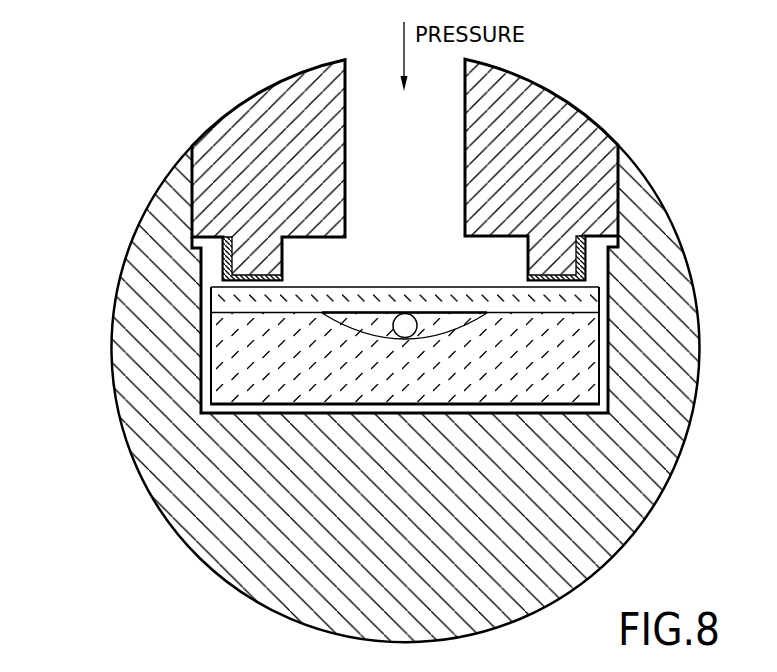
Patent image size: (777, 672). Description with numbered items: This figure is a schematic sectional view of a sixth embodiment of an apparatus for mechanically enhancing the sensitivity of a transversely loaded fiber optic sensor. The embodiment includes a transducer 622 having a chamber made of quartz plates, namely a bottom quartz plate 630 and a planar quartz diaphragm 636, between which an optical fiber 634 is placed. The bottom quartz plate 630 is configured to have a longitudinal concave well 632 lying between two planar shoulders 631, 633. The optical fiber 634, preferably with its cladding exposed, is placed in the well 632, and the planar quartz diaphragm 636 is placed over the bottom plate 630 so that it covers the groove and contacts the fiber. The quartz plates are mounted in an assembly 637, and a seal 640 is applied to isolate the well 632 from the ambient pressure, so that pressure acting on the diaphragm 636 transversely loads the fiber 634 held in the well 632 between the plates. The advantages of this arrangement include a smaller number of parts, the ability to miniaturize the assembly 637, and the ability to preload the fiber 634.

The transducer 622 is at (403, 350).
The bottom quartz plate 630 is at (406, 359).
The planar shoulder 631 is at (240, 315).
The concave well 632 is at (447, 322).
The planar shoulder 633 is at (563, 312).
The optical fiber 634 is at (407, 324).
The planar quartz diaphragm 636 is at (367, 300).
The assembly 637 is at (560, 530).
The seal 640 is at (223, 265).